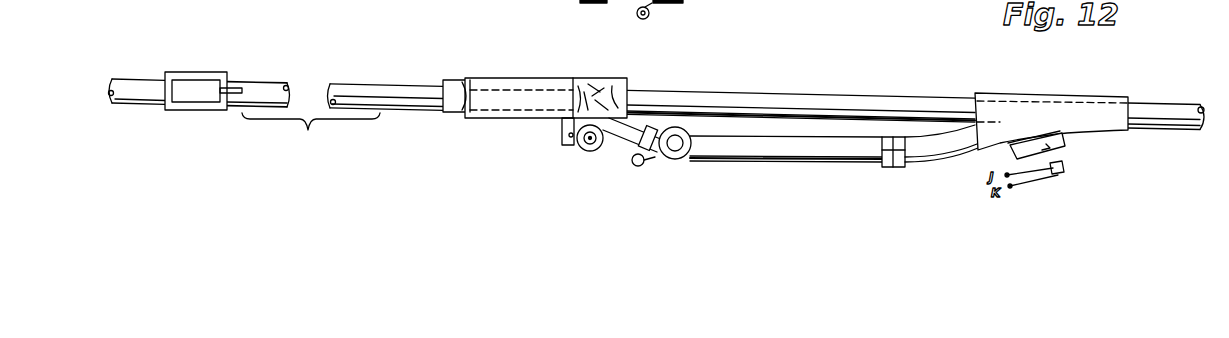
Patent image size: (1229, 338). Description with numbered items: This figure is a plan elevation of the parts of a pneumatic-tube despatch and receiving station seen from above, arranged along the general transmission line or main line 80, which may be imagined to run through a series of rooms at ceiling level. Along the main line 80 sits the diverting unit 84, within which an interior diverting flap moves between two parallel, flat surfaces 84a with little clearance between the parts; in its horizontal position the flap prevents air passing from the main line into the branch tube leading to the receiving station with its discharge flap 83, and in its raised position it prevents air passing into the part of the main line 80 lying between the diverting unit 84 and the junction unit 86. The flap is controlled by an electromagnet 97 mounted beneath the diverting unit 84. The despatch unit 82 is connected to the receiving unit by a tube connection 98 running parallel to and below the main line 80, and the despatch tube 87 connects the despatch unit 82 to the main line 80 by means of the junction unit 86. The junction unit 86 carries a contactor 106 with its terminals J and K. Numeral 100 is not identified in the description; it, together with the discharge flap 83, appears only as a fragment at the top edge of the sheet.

The main line 80 is at (803, 102).
The despatch unit 82 is at (664, 166).
The discharge flap 83 is at (567, 0).
The diverting unit 84 is at (502, 105).
The parallel flat surfaces 84a is at (522, 78).
The junction unit 86 is at (1020, 105).
The despatch tube 87 is at (195, 87).
The electromagnet 97 is at (585, 152).
The tube connection 98 is at (627, 137).
The fitting 100 is at (717, 0).
The contactor 106 is at (1072, 148).